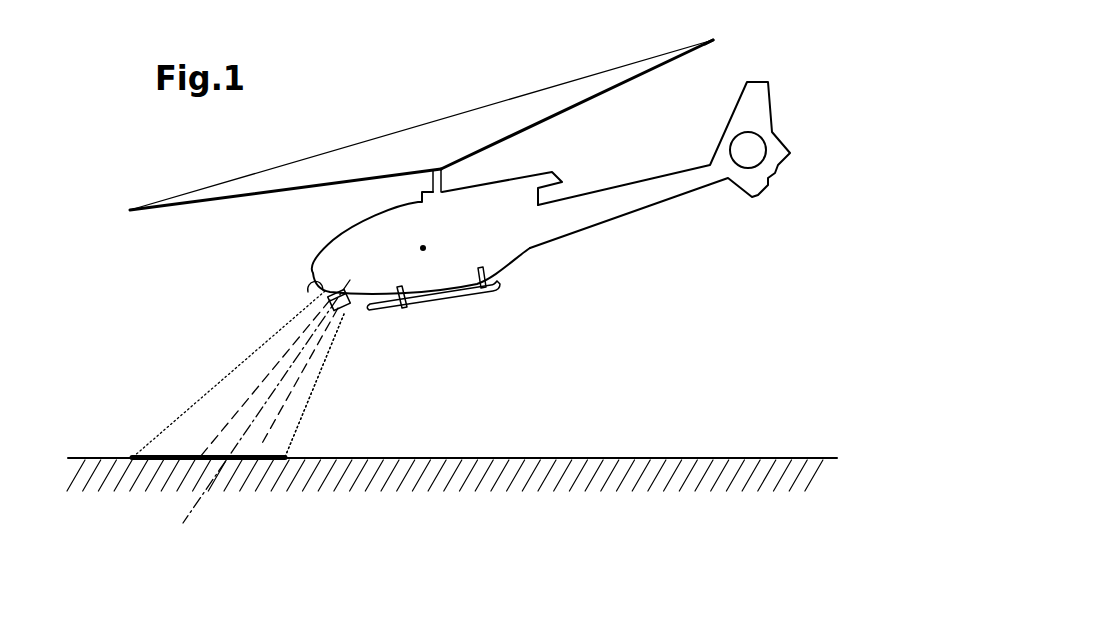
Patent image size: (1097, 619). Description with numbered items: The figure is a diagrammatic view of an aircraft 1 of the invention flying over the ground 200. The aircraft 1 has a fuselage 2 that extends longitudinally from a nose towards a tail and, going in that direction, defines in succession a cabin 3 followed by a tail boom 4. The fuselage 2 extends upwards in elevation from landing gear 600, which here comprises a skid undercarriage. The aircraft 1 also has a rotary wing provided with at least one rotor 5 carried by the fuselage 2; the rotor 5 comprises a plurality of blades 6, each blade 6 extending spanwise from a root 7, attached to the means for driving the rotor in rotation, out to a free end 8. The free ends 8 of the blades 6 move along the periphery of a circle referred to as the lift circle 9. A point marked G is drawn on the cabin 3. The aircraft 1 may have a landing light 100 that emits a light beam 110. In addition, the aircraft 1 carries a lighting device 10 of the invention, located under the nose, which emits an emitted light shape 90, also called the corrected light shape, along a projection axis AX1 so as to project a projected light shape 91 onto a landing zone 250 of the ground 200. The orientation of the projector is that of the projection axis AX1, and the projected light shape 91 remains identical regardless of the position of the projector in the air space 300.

The aircraft 1 is at (722, 315).
The fuselage 2 is at (552, 265).
The cabin 3 is at (380, 271).
The tail boom 4 is at (662, 203).
The rotor 5 is at (444, 173).
The blade 6 is at (582, 102).
The root 7 is at (445, 166).
The free end 8 is at (714, 40).
The lift circle 9 is at (577, 79).
The lighting device 10 is at (356, 302).
The emitted light shape 90 is at (343, 322).
The projected light shape 91 is at (177, 455).
The landing light 100 is at (300, 297).
The light beam 110 is at (242, 383).
The ground 200 is at (93, 457).
The landing zone 250 is at (168, 465).
The air space 300 is at (133, 326).
The landing gear 600 is at (445, 316).
The projection axis AX1 is at (193, 503).
The center of gravity G is at (435, 238).